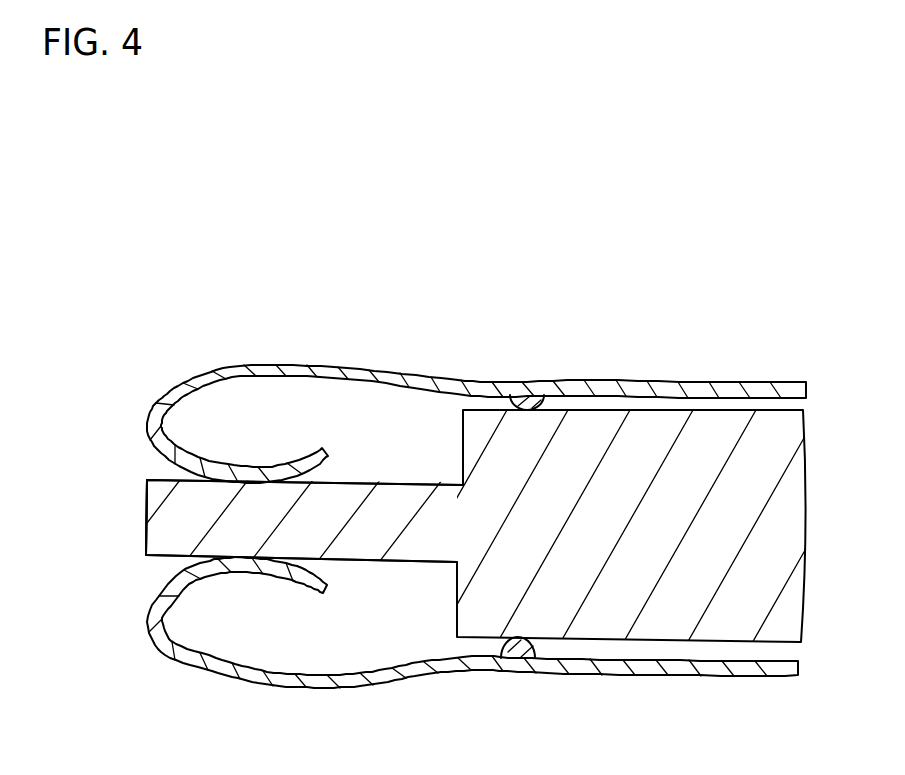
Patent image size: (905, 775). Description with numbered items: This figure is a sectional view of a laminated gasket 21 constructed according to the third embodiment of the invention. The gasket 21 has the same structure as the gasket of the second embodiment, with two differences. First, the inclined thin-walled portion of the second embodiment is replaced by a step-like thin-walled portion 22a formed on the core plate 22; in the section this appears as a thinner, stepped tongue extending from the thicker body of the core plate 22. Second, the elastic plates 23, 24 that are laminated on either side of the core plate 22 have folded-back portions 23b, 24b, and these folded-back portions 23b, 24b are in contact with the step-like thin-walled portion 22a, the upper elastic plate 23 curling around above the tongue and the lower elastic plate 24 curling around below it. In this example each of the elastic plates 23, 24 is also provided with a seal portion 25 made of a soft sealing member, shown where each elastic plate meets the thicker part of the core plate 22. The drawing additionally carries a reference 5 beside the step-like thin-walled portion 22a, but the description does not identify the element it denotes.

The laminated gasket 21 is at (644, 345).
The core plate 22 is at (778, 537).
The step-like thin-walled portion 22a is at (356, 498).
The elastic plate 23 is at (740, 381).
The folded-back portion 23b is at (206, 465).
The elastic plate 24 is at (703, 705).
The folded-back portion 24b is at (242, 572).
The seal portion 25 is at (529, 402).
The printed circuit board 5 is at (98, 535).